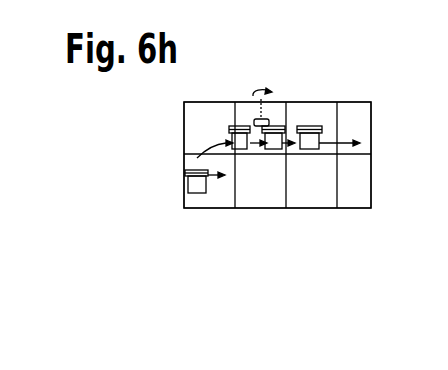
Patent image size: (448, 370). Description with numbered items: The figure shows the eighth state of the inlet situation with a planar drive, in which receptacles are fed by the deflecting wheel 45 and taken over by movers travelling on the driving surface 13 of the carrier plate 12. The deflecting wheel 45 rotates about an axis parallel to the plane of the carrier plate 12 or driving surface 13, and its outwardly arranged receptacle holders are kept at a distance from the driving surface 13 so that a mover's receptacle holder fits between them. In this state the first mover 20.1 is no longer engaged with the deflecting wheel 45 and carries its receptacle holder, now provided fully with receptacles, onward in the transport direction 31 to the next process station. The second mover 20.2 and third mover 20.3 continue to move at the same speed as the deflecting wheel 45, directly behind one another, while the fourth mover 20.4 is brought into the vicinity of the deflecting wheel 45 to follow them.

The carrier plate 12 is at (197, 134).
The driving surface 13 is at (277, 155).
The first mover 20.1 is at (305, 143).
The second mover 20.2 is at (270, 143).
The third mover 20.3 is at (242, 142).
The fourth mover 20.4 is at (182, 186).
The transport direction 31 is at (343, 146).
The deflecting wheel 45 is at (266, 121).